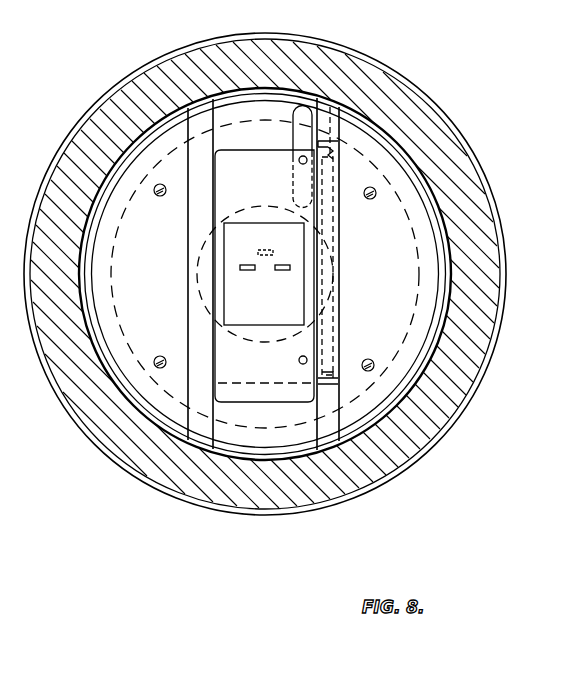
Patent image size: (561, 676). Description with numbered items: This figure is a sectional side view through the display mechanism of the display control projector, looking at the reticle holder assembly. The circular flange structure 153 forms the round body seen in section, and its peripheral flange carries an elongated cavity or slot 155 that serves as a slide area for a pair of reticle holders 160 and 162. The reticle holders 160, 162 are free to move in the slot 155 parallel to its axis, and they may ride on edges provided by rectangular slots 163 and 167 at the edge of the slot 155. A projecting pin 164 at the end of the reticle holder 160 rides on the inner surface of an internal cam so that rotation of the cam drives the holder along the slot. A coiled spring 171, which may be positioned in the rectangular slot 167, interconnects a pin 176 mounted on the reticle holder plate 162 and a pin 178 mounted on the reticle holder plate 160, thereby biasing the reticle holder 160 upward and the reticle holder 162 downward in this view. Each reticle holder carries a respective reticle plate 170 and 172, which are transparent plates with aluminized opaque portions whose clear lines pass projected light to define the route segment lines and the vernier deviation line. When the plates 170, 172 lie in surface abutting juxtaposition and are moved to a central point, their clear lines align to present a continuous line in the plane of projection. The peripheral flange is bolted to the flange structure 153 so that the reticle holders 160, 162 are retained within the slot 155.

The circular flange structure 153 is at (423, 312).
The elongated cavity or slot 155 is at (295, 436).
The reticle holder 160 is at (258, 392).
The reticle holder 162 is at (272, 133).
The rectangular slot 163 is at (198, 254).
The projecting pin 164 is at (298, 358).
The rectangular slot 167 is at (337, 276).
The reticle plate 170 is at (308, 208).
The coiled spring 171 is at (329, 324).
The reticle plate 172 is at (298, 190).
The pin 176 is at (333, 138).
The pin 178 is at (335, 386).